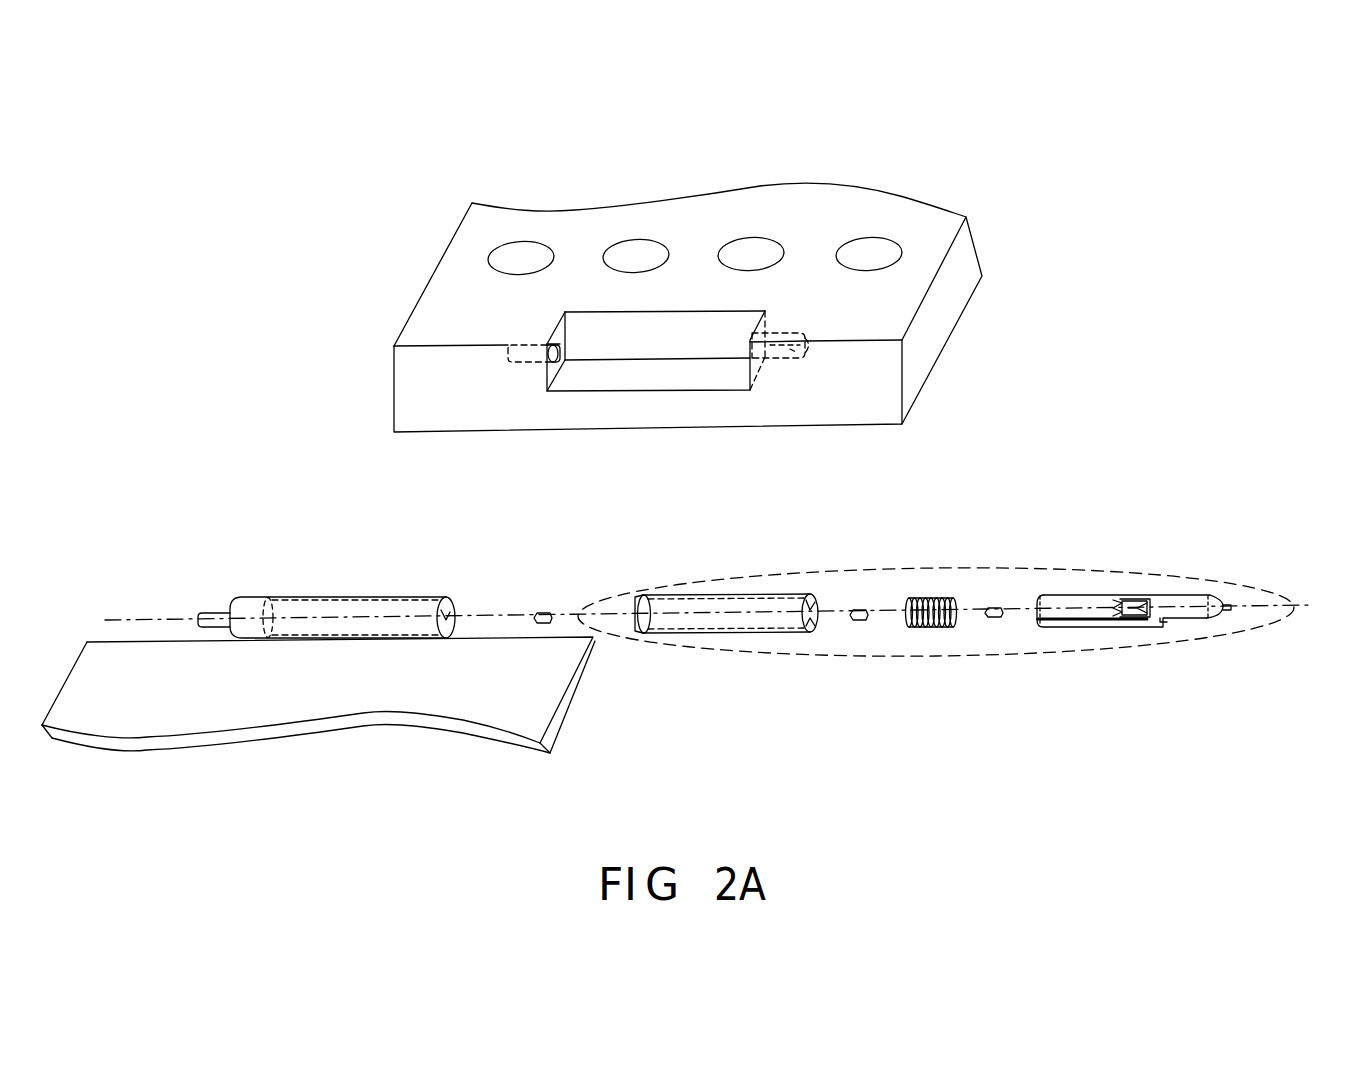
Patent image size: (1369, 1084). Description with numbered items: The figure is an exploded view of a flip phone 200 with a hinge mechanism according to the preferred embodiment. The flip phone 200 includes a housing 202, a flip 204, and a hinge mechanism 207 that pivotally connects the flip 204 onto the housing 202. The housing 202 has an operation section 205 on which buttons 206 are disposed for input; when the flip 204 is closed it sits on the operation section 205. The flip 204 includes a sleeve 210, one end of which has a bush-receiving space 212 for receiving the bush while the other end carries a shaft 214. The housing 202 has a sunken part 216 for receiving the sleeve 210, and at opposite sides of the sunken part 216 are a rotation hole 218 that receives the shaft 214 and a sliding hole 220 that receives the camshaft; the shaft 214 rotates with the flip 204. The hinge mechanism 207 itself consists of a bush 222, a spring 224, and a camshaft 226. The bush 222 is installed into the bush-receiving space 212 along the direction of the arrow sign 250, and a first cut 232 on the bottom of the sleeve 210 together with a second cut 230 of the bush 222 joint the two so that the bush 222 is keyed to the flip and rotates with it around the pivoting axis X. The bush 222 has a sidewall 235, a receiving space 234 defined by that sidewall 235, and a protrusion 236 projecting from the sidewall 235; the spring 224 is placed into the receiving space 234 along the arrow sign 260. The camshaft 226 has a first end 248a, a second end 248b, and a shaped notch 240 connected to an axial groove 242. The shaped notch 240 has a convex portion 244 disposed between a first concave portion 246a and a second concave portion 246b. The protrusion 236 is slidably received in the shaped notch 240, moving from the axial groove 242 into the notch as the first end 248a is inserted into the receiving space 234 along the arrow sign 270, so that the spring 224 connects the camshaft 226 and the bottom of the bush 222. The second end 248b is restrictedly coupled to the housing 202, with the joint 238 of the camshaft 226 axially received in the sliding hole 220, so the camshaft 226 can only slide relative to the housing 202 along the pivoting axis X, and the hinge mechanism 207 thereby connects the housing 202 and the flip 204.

The flip phone 200 is at (1100, 210).
The housing 202 is at (927, 320).
The flip 204 is at (533, 710).
The operation section 205 is at (472, 242).
The buttons 206 is at (521, 256).
The hinge mechanism 207 is at (940, 657).
The sleeve 210 is at (359, 562).
The bush-receiving space 212 is at (443, 613).
The shaft 214 is at (212, 618).
The sunken part 216 is at (692, 330).
The rotation hole 218 is at (535, 345).
The sliding hole 220 is at (808, 349).
The bush 222 is at (721, 647).
The spring 224 is at (928, 600).
The camshaft 226 is at (1171, 640).
The second cut 230 is at (638, 637).
The first cut 232 is at (263, 598).
The receiving space 234 is at (810, 600).
The sidewall 235 is at (755, 633).
The protrusion 236 is at (810, 637).
The joint 238 is at (1232, 610).
The shaped notch 240 is at (1149, 608).
The axial groove 242 is at (1065, 624).
The convex portion 244 is at (1128, 616).
The first concave portion 246a is at (1123, 612).
The second concave portion 246b is at (1113, 603).
The first end 248a is at (1036, 595).
The second end 248b is at (1220, 595).
The arrow sign 250 is at (545, 612).
The arrow sign 260 is at (864, 621).
The arrow sign 270 is at (995, 619).